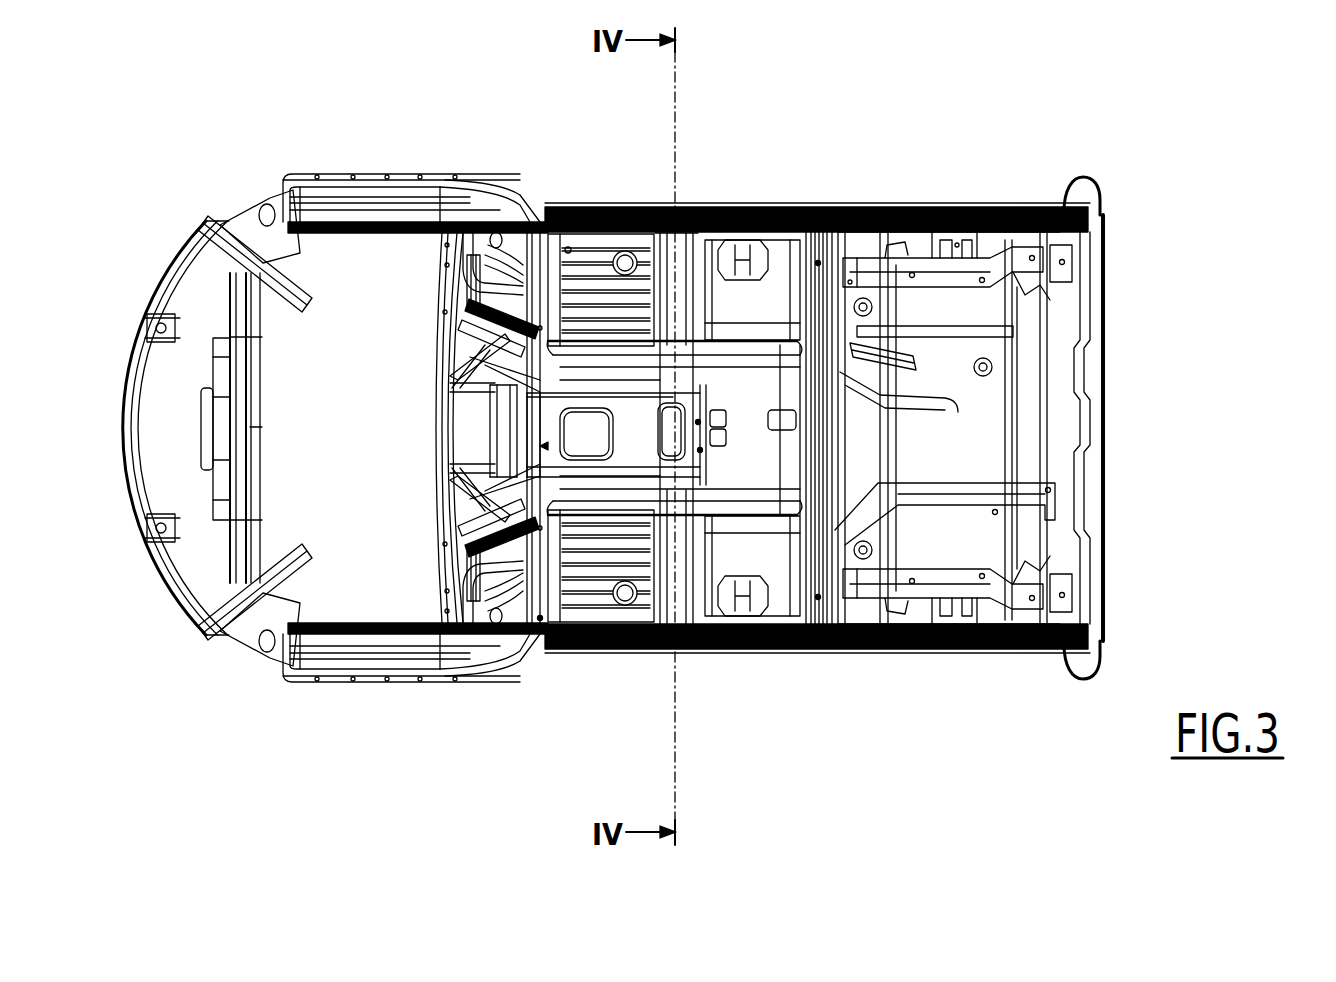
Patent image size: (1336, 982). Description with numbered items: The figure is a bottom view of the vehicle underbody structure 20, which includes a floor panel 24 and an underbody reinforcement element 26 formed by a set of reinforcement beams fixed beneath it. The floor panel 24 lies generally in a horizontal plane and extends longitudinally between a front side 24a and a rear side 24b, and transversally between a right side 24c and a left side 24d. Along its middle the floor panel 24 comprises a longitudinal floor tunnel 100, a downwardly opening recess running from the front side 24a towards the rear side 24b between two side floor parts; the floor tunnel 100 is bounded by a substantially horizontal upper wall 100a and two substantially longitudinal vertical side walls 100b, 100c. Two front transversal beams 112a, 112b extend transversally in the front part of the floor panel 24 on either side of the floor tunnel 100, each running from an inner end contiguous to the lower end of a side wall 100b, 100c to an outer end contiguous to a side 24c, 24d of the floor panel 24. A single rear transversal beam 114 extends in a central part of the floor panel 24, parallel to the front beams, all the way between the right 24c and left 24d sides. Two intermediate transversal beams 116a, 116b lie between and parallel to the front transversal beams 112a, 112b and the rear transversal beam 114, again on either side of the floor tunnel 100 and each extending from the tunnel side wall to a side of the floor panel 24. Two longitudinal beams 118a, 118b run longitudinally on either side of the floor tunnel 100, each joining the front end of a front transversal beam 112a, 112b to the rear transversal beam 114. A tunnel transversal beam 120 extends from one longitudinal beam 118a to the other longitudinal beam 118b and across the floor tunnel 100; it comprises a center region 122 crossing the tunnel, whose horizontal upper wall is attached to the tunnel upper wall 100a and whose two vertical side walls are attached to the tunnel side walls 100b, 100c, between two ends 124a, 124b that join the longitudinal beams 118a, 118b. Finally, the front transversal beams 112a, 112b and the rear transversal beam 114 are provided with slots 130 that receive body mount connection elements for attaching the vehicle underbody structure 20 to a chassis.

The vehicle underbody structure 20 is at (983, 190).
The floor panel 24 is at (883, 237).
The front side 24a is at (467, 290).
The rear side 24b is at (1112, 368).
The right side 24c is at (745, 250).
The left side 24d is at (810, 650).
The underbody reinforcement element 26 is at (733, 250).
The floor tunnel 100 is at (538, 448).
The upper wall 100a is at (538, 448).
The side wall 100b is at (780, 257).
The side wall 100c is at (737, 457).
The front transversal beam 112a is at (540, 262).
The front transversal beam 112b is at (538, 565).
The rear transversal beam 114 is at (830, 317).
The intermediate transversal beam 116a is at (733, 243).
The intermediate transversal beam 116b is at (668, 595).
The longitudinal beam 118a is at (600, 335).
The longitudinal beam 118b is at (623, 492).
The tunnel transversal beam 120 is at (675, 413).
The center region 122 is at (740, 453).
The end 124a is at (702, 423).
The end 124b is at (703, 452).
The slots 130 is at (568, 247).